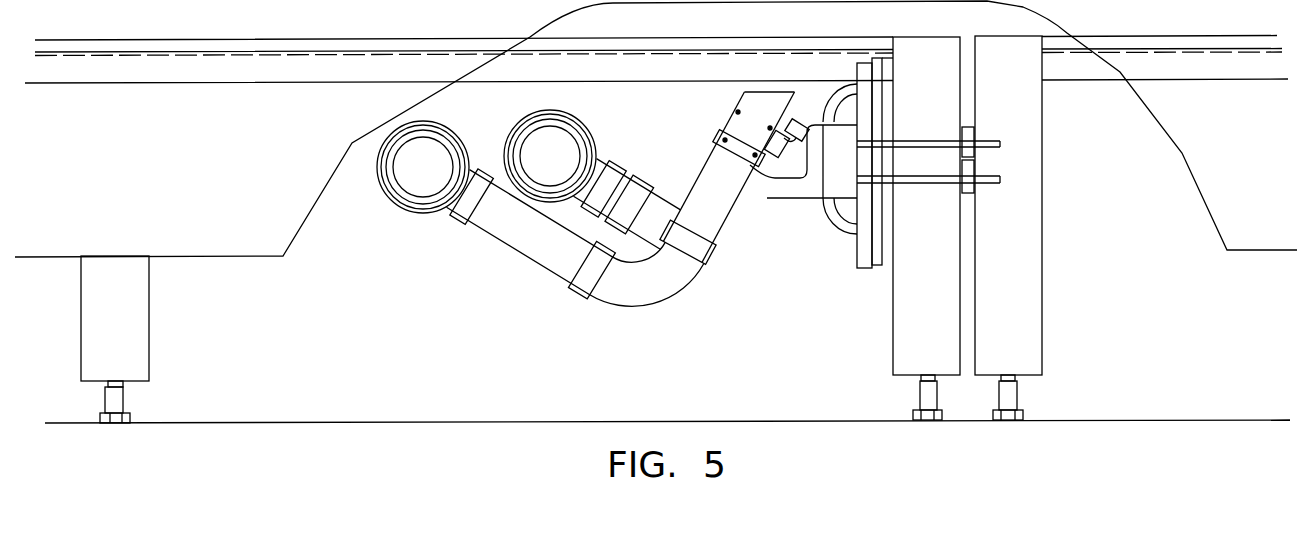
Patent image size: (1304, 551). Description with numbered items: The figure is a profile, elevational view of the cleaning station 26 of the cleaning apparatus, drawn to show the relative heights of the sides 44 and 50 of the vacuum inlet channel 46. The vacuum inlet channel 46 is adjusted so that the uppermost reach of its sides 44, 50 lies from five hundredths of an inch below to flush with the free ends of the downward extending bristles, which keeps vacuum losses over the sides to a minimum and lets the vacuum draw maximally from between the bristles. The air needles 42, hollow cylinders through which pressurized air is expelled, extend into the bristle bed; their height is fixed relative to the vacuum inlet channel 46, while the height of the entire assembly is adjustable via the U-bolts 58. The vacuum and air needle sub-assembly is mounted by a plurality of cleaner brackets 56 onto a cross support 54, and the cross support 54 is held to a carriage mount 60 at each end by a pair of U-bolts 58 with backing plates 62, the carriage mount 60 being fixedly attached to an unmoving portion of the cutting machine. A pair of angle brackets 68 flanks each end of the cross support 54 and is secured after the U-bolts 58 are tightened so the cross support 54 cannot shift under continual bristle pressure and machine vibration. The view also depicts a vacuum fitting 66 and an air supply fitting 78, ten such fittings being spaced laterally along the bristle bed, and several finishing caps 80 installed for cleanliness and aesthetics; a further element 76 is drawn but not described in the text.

The cleaning station 26 is at (760, 305).
The air needles 42 is at (775, 91).
The side of vacuum inlet channel 44 is at (740, 102).
The vacuum inlet channel 46 is at (722, 123).
The side of vacuum inlet channel 50 is at (797, 105).
The cross support 54 is at (845, 220).
The cleaner brackets 56 is at (768, 196).
The U-bolts 58 is at (947, 181).
The carriage mount 60 is at (887, 237).
The backing plates 62 is at (970, 172).
The vacuum fitting 66 is at (467, 145).
The angle brackets 68 is at (866, 108).
The clamp 76 is at (742, 141).
The air supply fitting 78 is at (808, 122).
The finishing caps 80 is at (872, 66).